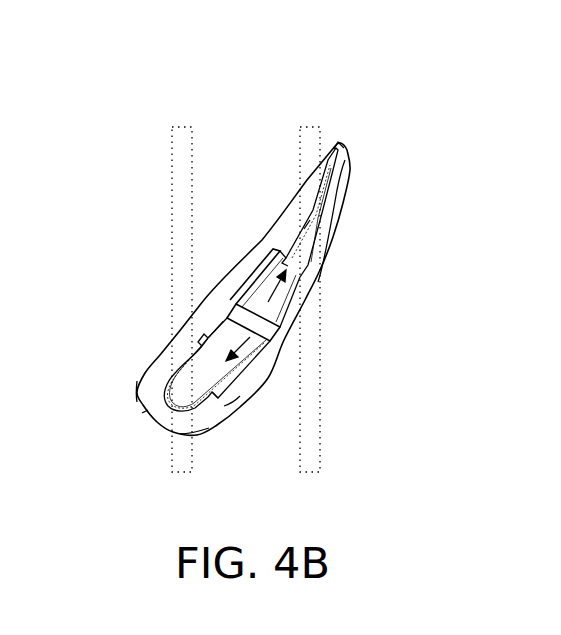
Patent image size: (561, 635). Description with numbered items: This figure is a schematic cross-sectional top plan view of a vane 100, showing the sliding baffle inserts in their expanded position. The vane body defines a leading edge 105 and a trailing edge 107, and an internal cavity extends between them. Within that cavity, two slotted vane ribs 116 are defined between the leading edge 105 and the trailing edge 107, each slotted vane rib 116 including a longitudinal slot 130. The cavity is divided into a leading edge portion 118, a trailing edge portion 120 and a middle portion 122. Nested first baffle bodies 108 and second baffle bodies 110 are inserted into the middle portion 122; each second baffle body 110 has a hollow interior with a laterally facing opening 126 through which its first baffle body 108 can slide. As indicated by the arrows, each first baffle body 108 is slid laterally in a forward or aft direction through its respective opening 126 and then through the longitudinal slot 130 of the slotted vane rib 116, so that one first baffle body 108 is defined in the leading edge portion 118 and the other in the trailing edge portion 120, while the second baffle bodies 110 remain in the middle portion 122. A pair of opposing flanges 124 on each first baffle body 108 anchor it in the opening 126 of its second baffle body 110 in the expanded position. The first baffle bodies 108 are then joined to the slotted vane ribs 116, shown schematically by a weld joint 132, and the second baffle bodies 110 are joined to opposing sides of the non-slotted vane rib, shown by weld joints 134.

The vane 100 is at (357, 118).
The leading edge 105 is at (163, 433).
The trailing edge 107 is at (340, 138).
The first baffle body 108 is at (304, 229).
The second baffle body 110 is at (254, 287).
The slotted vane rib 116 is at (224, 406).
The leading edge portion 118 is at (137, 381).
The trailing edge portion 120 is at (320, 192).
The middle portion 122 is at (290, 313).
The flange 124 is at (287, 261).
The opening 126 is at (228, 400).
The longitudinal slot 130 is at (209, 428).
The weld joint 132 is at (325, 250).
The weld joint 134 is at (252, 322).